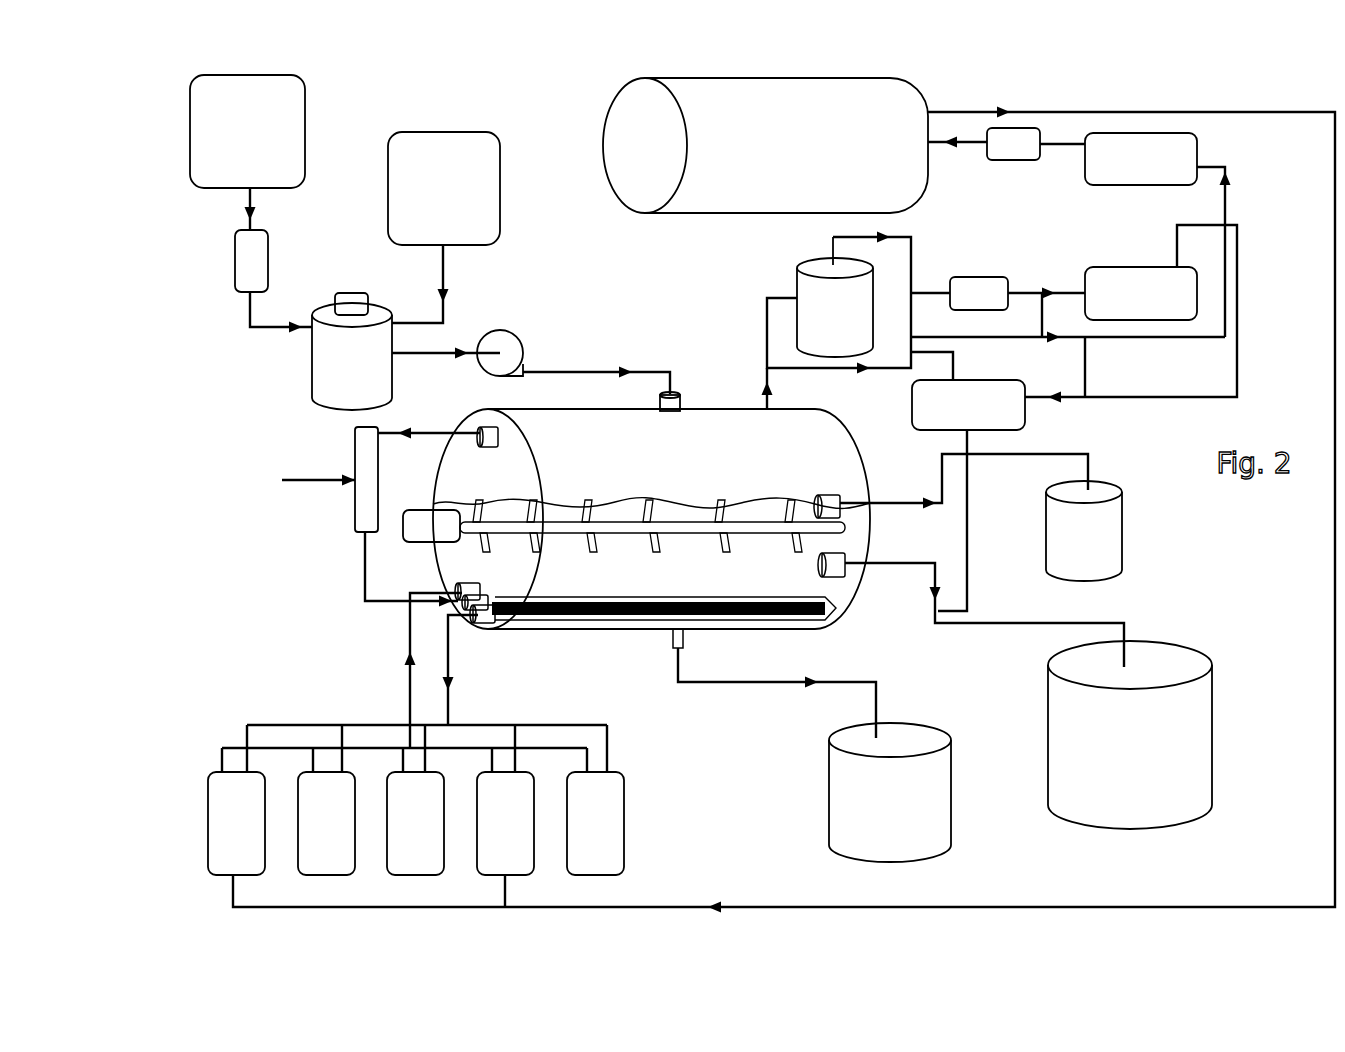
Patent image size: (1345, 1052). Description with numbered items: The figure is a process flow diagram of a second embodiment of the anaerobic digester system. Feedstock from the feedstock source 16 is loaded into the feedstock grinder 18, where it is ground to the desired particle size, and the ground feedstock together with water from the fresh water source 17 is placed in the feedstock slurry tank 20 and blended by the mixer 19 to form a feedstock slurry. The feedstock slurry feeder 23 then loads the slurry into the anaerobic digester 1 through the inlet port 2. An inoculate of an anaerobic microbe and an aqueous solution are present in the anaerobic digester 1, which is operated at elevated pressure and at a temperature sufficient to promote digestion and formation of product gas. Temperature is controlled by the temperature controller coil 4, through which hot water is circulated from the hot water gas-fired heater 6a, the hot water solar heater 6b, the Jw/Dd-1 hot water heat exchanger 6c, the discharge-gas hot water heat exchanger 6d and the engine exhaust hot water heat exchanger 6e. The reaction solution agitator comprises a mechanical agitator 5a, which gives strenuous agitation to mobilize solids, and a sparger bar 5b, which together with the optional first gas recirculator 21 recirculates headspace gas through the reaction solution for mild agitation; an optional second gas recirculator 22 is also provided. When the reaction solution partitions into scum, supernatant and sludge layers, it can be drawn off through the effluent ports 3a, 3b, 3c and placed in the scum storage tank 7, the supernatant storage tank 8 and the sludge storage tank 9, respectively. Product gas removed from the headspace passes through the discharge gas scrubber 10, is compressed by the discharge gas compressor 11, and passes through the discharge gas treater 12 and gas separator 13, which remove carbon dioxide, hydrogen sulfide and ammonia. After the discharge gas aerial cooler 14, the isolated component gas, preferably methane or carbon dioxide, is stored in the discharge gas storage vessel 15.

The anaerobic digester 1 is at (651, 519).
The inlet port 2 is at (682, 392).
The effluent port 3a is at (845, 496).
The effluent port 3b is at (850, 570).
The effluent port 3c is at (693, 642).
The temperature controller coil 4 is at (505, 627).
The mechanical agitator 5a is at (425, 542).
The sparger bar 5b is at (580, 624).
The hot water gas-fired heater 6a is at (236, 823).
The hot water solar heater 6b is at (326, 823).
The Jw/Dd-1 hot water heat exchanger 6c is at (415, 823).
The discharge-gas hot water heat exchanger 6d is at (505, 823).
The engine exhaust hot water heat exchanger 6e is at (595, 823).
The scum storage tank 7 is at (1084, 531).
The supernatant storage tank 8 is at (1130, 735).
The sludge storage tank 9 is at (890, 792).
The discharge gas scrubber 10 is at (835, 297).
The discharge gas compressor 11 is at (979, 293).
The discharge gas treater 12 is at (1141, 293).
The gas separator 13 is at (1141, 159).
The discharge gas aerial cooler 14 is at (1013, 144).
The discharge gas storage vessel 15 is at (765, 145).
The feedstock source 16 is at (247, 131).
The fresh water source 17 is at (444, 188).
The feedstock grinder 18 is at (272, 236).
The mixer 19 is at (345, 290).
The feedstock slurry tank 20 is at (352, 356).
The first gas recirculator 21 is at (370, 479).
The second gas recirculator 22 is at (968, 405).
The feedstock slurry feeder 23 is at (527, 345).